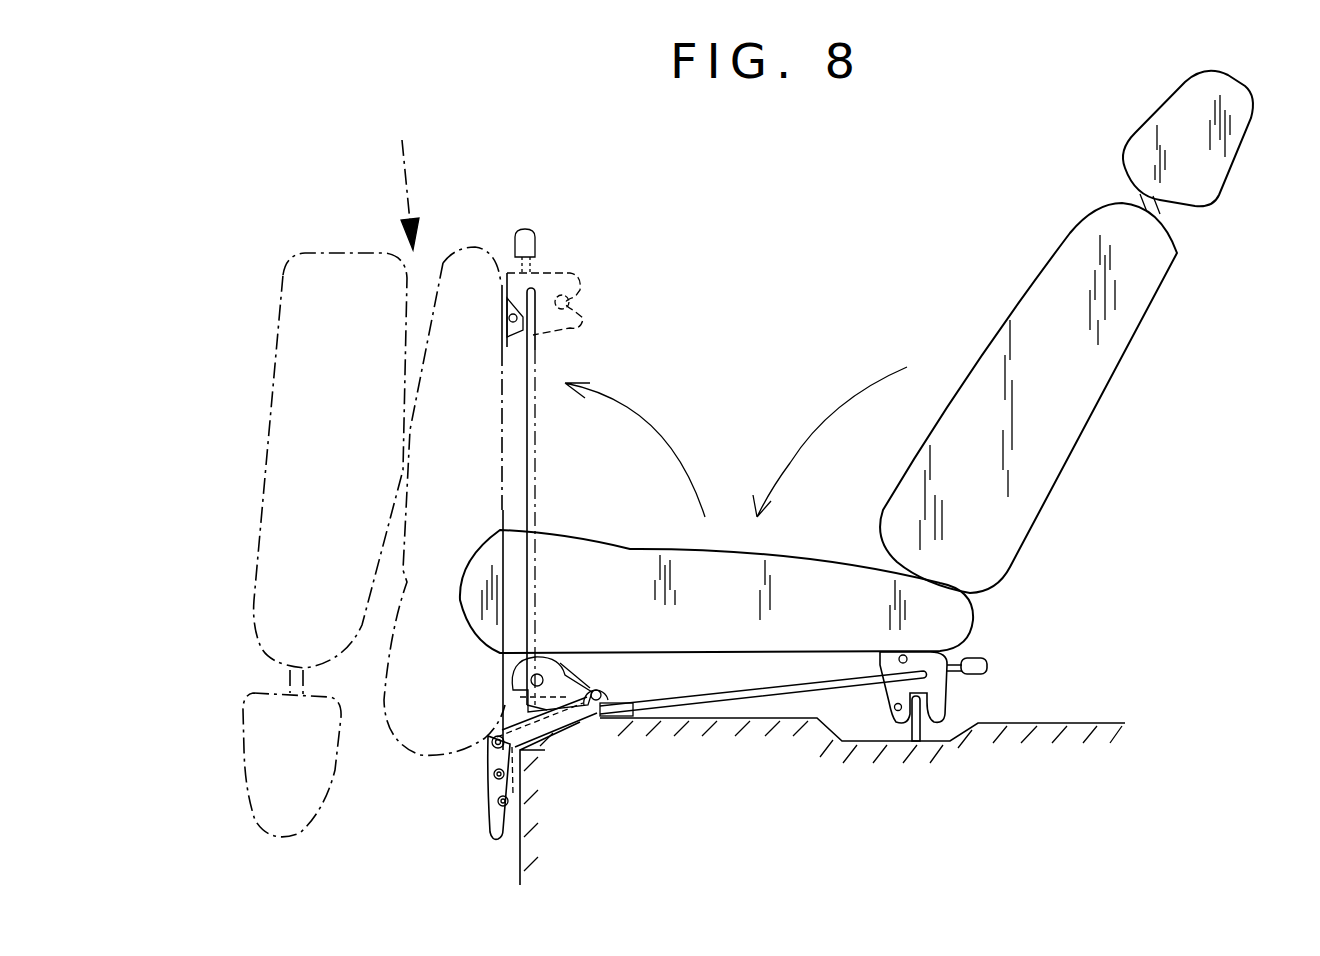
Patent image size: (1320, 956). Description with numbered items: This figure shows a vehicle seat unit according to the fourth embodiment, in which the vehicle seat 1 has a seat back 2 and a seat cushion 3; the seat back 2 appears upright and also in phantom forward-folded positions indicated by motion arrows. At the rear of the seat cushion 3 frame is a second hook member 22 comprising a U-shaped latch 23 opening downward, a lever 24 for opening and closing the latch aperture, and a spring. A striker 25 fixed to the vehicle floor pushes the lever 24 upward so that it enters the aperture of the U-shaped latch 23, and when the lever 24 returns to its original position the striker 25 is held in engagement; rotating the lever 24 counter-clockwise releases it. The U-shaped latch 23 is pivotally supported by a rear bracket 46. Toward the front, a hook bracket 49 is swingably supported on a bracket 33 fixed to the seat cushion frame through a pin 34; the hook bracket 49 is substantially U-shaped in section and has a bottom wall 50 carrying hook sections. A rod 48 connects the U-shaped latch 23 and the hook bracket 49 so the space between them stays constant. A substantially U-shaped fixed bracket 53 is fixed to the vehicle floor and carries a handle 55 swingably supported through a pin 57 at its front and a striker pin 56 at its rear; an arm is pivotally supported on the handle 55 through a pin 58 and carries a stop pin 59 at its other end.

The vehicle seat 1 is at (862, 330).
The seat back 2 is at (1018, 312).
The seat cushion 3 is at (803, 555).
The second hook member 22 is at (990, 690).
The U-shaped latch 23 is at (887, 697).
The lever 24 is at (987, 657).
The striker 25 is at (923, 727).
The bracket 33 is at (567, 667).
The pin 34 is at (552, 655).
The rear bracket 46 is at (873, 660).
The rod 48 is at (537, 472).
The hook bracket 49 is at (507, 703).
The bottom wall 50 is at (533, 753).
The fixed bracket 53 is at (577, 723).
The handle 55 is at (488, 823).
The striker pin 56 is at (600, 683).
The pin 57 is at (493, 775).
The pin 58 is at (497, 808).
The stop pin 59 is at (493, 737).